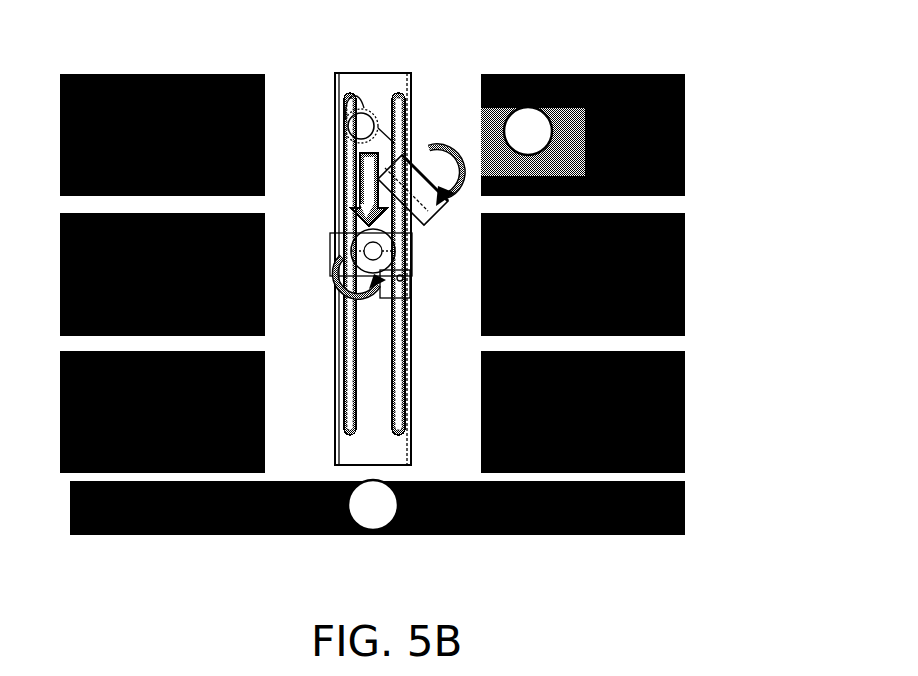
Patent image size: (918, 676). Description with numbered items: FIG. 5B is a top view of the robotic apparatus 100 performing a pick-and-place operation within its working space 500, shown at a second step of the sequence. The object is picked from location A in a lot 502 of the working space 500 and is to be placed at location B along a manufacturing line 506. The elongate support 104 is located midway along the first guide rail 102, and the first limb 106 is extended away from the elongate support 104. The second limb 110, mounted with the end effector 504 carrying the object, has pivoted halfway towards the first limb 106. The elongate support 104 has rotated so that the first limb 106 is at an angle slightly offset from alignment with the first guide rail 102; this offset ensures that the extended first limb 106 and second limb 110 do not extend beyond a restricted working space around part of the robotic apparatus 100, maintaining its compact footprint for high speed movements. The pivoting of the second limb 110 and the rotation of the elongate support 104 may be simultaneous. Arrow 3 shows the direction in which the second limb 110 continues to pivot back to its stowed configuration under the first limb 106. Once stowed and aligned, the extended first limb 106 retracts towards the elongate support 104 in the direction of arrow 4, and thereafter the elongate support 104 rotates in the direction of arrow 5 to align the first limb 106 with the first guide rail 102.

The arrow 3 is at (457, 150).
The arrow 4 is at (347, 212).
The arrow 5 is at (330, 292).
The robotic apparatus 100 is at (372, 269).
The first guide rail 102 is at (347, 358).
The elongate support 104 is at (395, 250).
The first limb 106 is at (345, 147).
The second limb 110 is at (385, 155).
The working space 500 is at (705, 333).
The lot 502 is at (677, 140).
The end effector 504 is at (403, 183).
The manufacturing line 506 is at (677, 510).